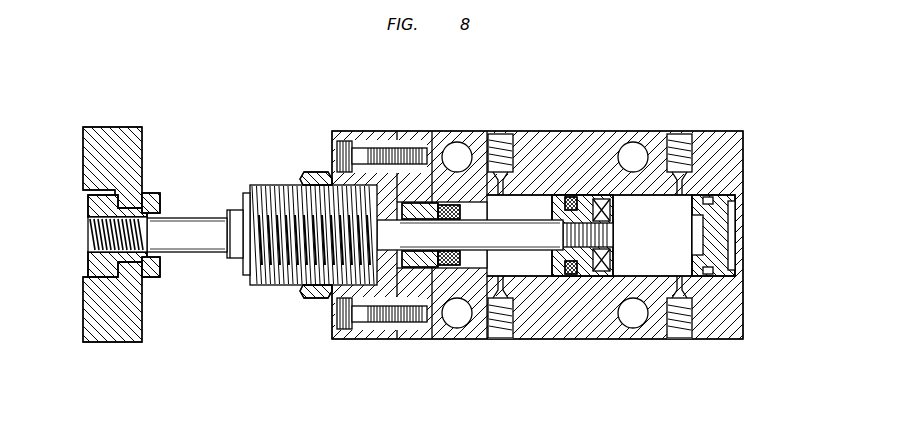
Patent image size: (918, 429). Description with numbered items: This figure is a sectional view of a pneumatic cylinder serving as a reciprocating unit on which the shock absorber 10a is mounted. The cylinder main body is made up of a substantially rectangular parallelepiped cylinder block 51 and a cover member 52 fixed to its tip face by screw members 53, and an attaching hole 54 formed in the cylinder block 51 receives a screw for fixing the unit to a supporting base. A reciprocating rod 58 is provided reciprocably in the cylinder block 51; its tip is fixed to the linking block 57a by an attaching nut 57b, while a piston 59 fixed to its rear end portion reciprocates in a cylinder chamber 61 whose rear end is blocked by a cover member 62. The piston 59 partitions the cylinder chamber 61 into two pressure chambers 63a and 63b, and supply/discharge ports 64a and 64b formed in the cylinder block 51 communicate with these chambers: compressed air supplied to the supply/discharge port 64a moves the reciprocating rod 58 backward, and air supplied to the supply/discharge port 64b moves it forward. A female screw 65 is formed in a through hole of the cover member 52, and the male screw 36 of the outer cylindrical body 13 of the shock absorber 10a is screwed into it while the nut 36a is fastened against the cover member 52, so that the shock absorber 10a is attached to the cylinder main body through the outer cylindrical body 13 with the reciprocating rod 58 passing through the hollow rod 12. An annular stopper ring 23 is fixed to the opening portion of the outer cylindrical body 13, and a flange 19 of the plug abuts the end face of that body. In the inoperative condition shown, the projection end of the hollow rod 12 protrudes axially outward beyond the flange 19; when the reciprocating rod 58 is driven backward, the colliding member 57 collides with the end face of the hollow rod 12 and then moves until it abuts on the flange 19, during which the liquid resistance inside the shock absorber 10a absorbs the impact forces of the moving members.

The shock absorber 10a is at (268, 308).
The hollow rod 12 is at (232, 262).
The outer cylindrical body 13 is at (262, 270).
The flange 19 is at (246, 193).
The stopper ring 23 is at (387, 263).
The male screw 36 is at (276, 185).
The nut 36a is at (318, 172).
The cylinder block 51 is at (590, 135).
The cover member 52 is at (368, 140).
The screw members 53 is at (365, 330).
The attaching hole 54 is at (455, 143).
The colliding member 57 is at (139, 360).
The linking block 57a is at (102, 344).
The attaching nut 57b is at (157, 193).
The reciprocating rod 58 is at (193, 222).
The piston 59 is at (553, 138).
The cylinder chamber 61 is at (622, 268).
The cover member 62 is at (720, 216).
The pressure chamber 63a is at (545, 270).
The pressure chamber 63b is at (660, 267).
The supply/discharge port 64a is at (500, 138).
The supply/discharge port 64b is at (680, 138).
The female screw 65 is at (327, 298).